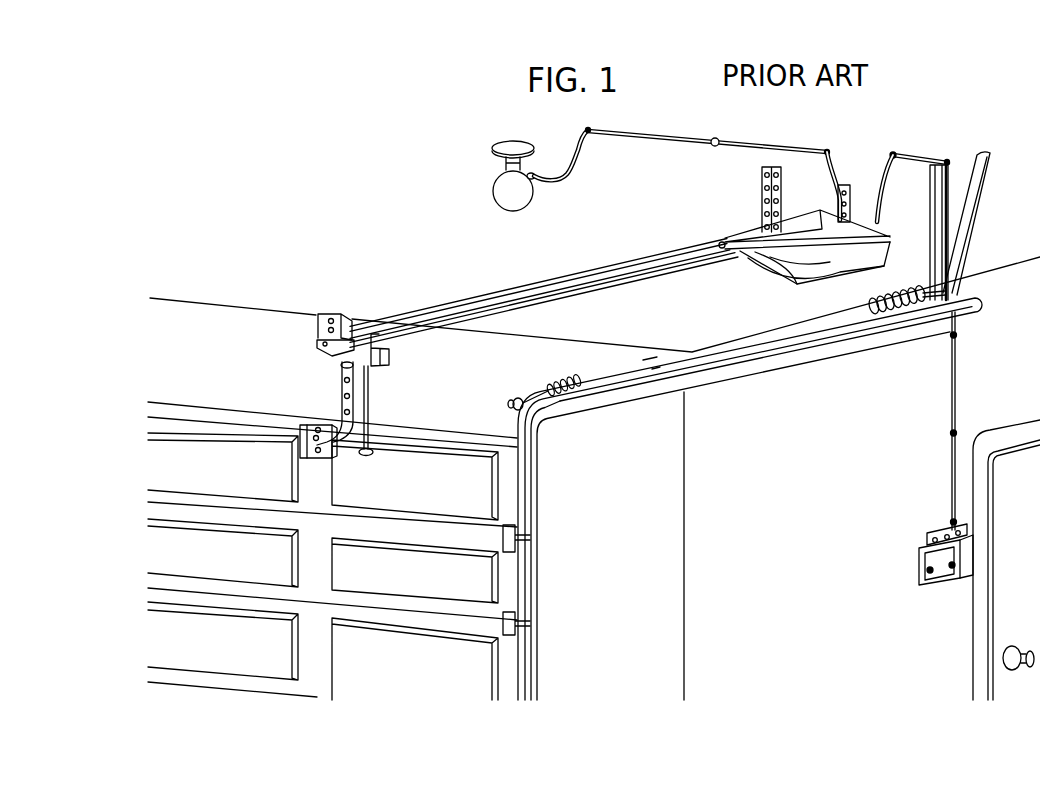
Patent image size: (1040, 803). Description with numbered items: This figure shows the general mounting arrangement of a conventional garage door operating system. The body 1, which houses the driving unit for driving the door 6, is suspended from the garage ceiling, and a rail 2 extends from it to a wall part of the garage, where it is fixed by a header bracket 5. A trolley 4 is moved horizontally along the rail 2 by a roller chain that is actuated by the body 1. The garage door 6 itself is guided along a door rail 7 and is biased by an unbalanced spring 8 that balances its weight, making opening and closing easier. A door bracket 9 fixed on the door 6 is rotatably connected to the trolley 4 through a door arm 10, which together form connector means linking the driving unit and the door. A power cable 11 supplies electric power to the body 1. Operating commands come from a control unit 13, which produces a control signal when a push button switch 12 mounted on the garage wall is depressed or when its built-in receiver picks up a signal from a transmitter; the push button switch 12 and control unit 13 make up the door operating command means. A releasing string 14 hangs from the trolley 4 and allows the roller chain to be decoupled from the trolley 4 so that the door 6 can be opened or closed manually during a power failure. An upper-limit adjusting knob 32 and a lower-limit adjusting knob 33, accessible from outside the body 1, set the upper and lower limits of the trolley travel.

The body 1 is at (772, 272).
The rail 2 is at (513, 289).
The trolley 4 is at (389, 361).
The header bracket 5 is at (317, 315).
The door 6 is at (470, 445).
The door rail 7 is at (705, 386).
The unbalanced spring 8 is at (892, 297).
The door bracket 9 is at (303, 452).
The door arm 10 is at (342, 392).
The power cable 11 is at (767, 146).
The push button switch 12 is at (932, 573).
The control unit 13 is at (914, 577).
The releasing string 14 is at (367, 458).
The upper-limit adjusting knob 32 is at (735, 230).
The lower-limit adjusting knob 33 is at (752, 230).